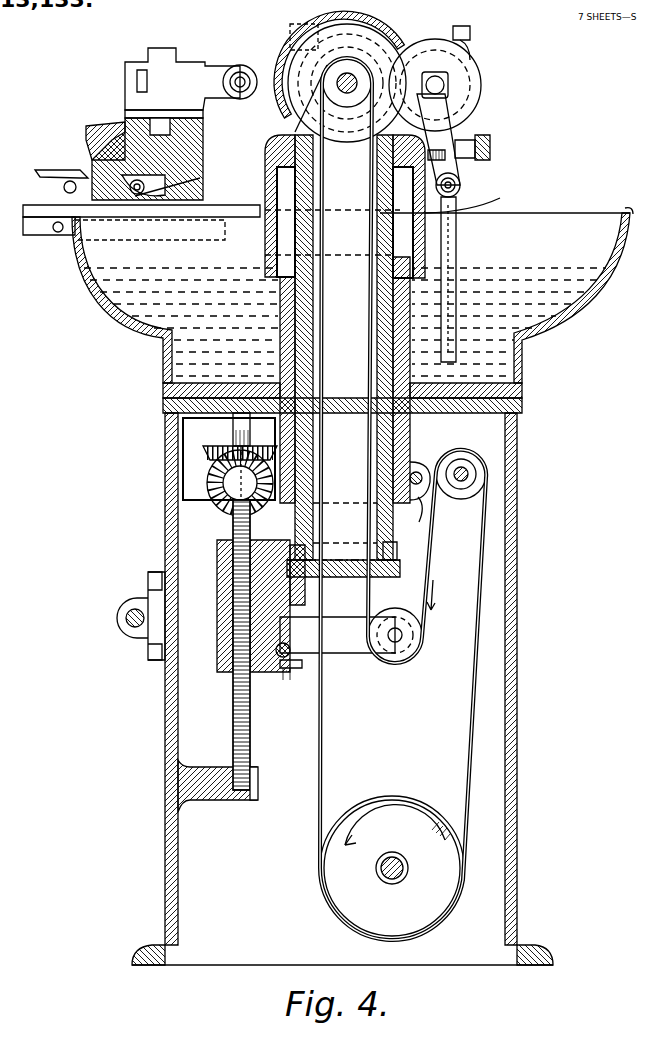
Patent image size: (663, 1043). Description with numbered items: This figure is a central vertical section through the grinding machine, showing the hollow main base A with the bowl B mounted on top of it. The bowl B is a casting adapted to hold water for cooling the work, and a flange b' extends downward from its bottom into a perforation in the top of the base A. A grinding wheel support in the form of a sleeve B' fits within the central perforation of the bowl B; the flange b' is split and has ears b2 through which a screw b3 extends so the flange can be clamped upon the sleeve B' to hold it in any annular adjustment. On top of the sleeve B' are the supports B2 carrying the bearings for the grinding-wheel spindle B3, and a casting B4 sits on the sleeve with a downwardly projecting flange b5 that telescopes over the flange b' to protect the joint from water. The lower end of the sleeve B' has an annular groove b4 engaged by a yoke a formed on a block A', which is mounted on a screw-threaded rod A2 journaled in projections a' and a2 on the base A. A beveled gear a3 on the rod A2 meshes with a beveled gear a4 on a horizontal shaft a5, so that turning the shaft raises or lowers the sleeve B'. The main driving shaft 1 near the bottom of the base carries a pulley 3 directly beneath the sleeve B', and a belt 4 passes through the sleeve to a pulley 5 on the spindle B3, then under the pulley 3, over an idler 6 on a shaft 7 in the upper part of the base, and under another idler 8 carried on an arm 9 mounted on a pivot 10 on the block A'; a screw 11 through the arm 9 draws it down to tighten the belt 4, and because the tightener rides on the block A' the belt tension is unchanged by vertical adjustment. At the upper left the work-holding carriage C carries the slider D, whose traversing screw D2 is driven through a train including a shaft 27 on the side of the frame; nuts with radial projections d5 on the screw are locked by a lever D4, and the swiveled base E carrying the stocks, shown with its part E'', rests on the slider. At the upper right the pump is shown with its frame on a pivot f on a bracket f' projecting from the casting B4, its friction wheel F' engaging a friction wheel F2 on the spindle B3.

The main base A is at (342, 681).
The block A' is at (238, 606).
The screw-threaded rod A2 is at (233, 703).
The yoke a is at (292, 563).
The projection a' is at (264, 775).
The projection a2 is at (253, 429).
The beveled gear a3 is at (222, 452).
The beveled gear a4 is at (228, 492).
The horizontal shaft a5 is at (236, 494).
The bowl B is at (352, 303).
The sleeve B' is at (332, 356).
The supports B2 is at (347, 83).
The grinding-wheel spindle B3 is at (356, 78).
The casting B4 is at (275, 146).
The flange b' is at (370, 386).
The ears b2 is at (419, 470).
The screw b3 is at (416, 500).
The annular groove b4 is at (398, 554).
The downwardly projecting flange b5 is at (287, 222).
The work-holding carriage C is at (195, 196).
The slider D is at (204, 160).
The traversing screw D2 is at (137, 194).
The lever D4 is at (61, 162).
The radial projections d5 is at (64, 187).
The swiveled base E is at (102, 139).
The bracket E'' is at (191, 83).
The friction wheel F' is at (448, 105).
The friction wheel F2 is at (392, 66).
The pivot f is at (465, 185).
The bracket f' is at (474, 274).
The main driving shaft 1 is at (393, 884).
The pulley 3 is at (404, 830).
The belt 4 is at (324, 765).
The pulley 5 is at (345, 72).
The idler 6 is at (466, 470).
The shaft 7 is at (466, 485).
The idler 8 is at (398, 628).
The arm 9 is at (353, 653).
The pivot 10 is at (282, 660).
The screw 11 is at (300, 670).
The shaft 27 is at (125, 620).